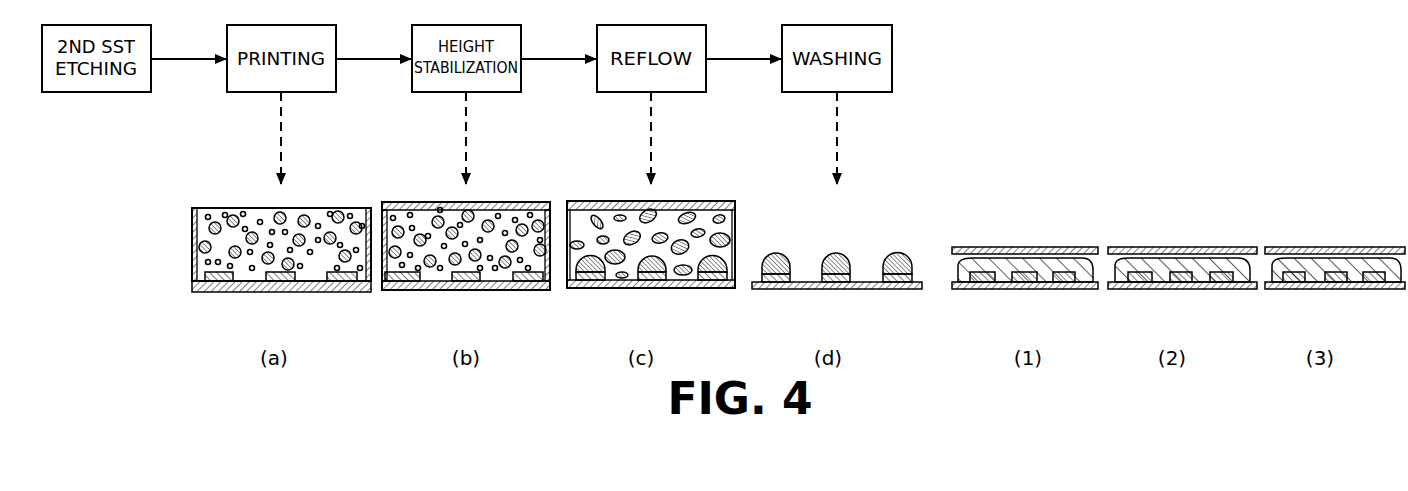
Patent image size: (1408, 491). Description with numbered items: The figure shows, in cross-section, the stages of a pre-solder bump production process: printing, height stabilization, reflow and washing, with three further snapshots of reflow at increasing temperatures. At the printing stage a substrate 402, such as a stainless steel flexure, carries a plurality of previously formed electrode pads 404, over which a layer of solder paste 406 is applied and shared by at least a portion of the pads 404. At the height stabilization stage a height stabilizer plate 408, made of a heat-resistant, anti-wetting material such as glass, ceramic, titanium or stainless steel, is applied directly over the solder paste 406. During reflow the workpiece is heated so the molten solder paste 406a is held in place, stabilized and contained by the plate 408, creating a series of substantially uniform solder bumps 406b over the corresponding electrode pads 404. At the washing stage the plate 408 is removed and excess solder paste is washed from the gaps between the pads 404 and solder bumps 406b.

The substrate 402 is at (795, 308).
The electrode pads 404 is at (795, 298).
The solder paste 406 is at (372, 217).
The solder paste 406a is at (633, 233).
The solder bumps 406b is at (762, 250).
The height stabilizer plate 408 is at (893, 210).